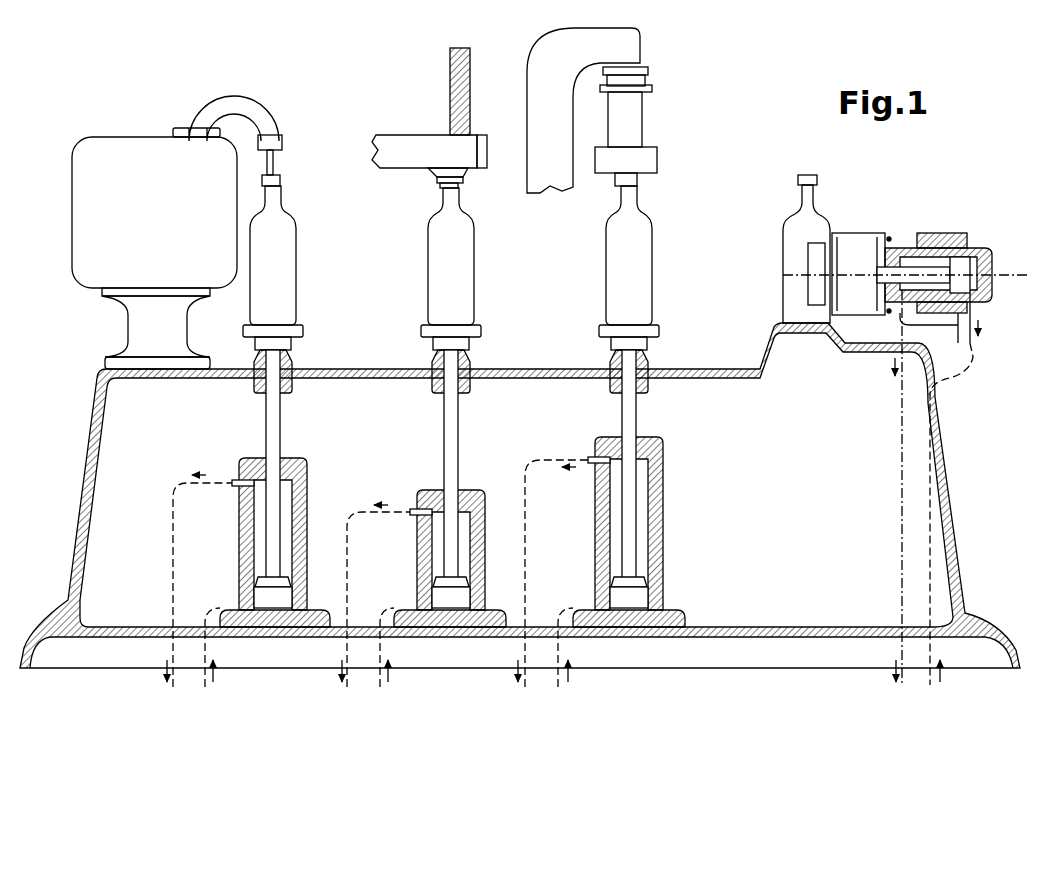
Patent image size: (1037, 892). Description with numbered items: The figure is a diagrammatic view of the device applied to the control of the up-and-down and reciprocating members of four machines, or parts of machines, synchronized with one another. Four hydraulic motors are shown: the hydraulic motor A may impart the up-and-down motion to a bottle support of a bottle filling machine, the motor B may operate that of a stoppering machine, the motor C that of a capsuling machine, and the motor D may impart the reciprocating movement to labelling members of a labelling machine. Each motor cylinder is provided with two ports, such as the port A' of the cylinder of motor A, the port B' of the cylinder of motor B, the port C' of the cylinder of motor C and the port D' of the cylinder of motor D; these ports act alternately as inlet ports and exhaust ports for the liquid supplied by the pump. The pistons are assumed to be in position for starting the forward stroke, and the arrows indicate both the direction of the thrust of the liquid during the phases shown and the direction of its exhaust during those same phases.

The hydraulic motor A is at (298, 526).
The port of cylinder of motor A A' is at (264, 633).
The hydraulic motor B is at (441, 520).
The port of cylinder of motor B B' is at (443, 628).
The hydraulic motor C is at (648, 523).
The port of cylinder of motor C C' is at (621, 628).
The hydraulic motor D is at (912, 243).
The port of cylinder of motor D D' is at (981, 301).